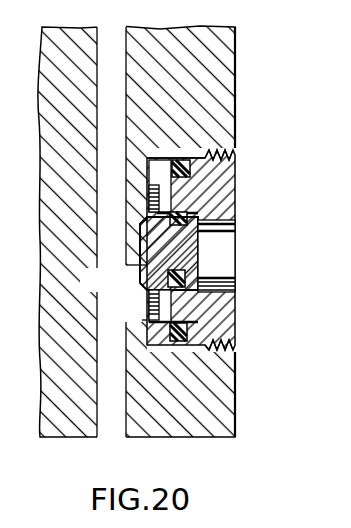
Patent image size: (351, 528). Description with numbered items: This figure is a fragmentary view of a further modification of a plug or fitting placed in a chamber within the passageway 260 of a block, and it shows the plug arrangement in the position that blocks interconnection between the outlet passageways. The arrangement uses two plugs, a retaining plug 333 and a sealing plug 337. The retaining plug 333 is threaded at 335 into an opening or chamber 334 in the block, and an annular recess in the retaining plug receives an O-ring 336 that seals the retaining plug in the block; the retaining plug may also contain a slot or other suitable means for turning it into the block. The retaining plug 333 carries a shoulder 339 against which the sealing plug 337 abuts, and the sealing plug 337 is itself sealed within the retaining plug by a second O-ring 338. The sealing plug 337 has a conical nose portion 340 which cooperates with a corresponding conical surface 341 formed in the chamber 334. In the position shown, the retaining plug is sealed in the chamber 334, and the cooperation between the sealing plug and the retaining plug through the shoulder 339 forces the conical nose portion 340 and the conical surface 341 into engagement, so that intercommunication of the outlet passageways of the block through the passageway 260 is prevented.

The passageway 260 is at (118, 92).
The retaining plug 333 is at (238, 178).
The opening or chamber 334 is at (202, 142).
The threads 335 is at (228, 152).
The O-ring 336 is at (176, 157).
The sealing plug 337 is at (202, 243).
The O-ring 338 is at (186, 286).
The shoulder 339 is at (192, 308).
The conical nose portion 340 is at (138, 267).
The conical surface 341 is at (140, 297).